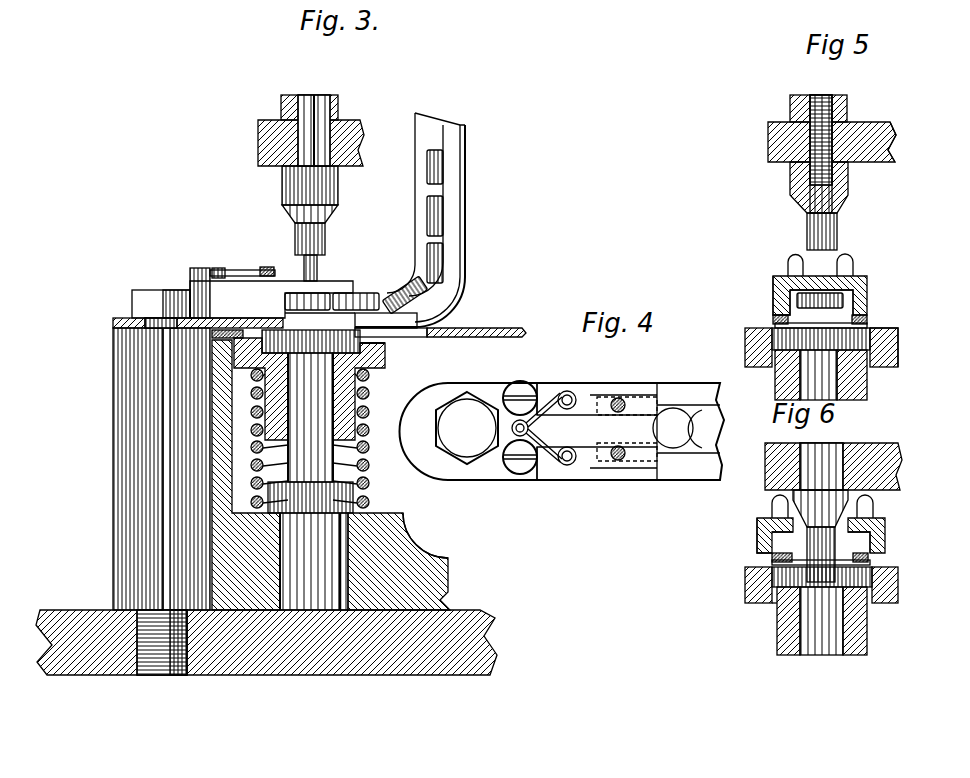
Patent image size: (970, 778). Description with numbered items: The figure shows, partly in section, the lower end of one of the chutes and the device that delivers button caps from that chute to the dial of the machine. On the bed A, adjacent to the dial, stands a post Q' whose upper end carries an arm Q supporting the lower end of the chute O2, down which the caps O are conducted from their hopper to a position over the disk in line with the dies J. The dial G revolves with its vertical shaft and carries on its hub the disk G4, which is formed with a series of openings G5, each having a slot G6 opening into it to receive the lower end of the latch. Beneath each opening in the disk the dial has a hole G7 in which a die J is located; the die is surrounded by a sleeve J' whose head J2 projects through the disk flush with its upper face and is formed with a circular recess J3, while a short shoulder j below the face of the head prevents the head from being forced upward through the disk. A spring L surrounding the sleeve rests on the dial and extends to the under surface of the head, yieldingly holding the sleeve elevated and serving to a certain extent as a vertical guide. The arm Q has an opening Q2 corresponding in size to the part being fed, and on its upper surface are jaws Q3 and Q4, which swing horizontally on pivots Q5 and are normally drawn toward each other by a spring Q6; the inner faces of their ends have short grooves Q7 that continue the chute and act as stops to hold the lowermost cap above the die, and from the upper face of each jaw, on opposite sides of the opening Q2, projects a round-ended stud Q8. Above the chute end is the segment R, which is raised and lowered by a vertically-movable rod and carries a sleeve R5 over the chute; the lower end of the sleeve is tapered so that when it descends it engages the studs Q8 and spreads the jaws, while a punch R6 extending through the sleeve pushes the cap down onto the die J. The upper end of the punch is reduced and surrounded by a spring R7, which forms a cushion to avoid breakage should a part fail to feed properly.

In FIG. 3, the bed A is at (68, 612).
In FIG. 3, the post Q' is at (143, 469).
In FIG. 3, the dial G is at (389, 520).
In FIG. 3, the hole G7 is at (350, 538).
In FIG. 3, the head J2 is at (384, 362).
In FIG. 5, the head J2 is at (899, 358).
In FIG. 6, the head J2 is at (747, 597).
In FIG. 3, the shoulder j is at (384, 343).
In FIG. 5, the shoulder j is at (899, 340).
In FIG. 3, the circular recess J3 is at (311, 341).
In FIG. 5, the circular recess J3 is at (821, 339).
In FIG. 6, the circular recess J3 is at (822, 578).
In FIG. 3, the die J is at (325, 481).
In FIG. 5, the die J is at (818, 375).
In FIG. 6, the die J is at (861, 626).
In FIG. 3, the spring L is at (370, 398).
In FIG. 3, the arm Q is at (178, 331).
In FIG. 4, the arm Q is at (561, 443).
In FIG. 5, the arm Q is at (790, 331).
In FIG. 6, the arm Q is at (859, 570).
In FIG. 3, the opening G5 is at (215, 338).
In FIG. 3, the jaw Q4 is at (274, 304).
In FIG. 4, the jaw Q4 is at (592, 464).
In FIG. 5, the jaw Q4 is at (775, 289).
In FIG. 6, the jaw Q4 is at (772, 529).
In FIG. 3, the pivot Q5 is at (203, 268).
In FIG. 4, the pivot Q5 is at (519, 387).
In FIG. 3, the spring Q6 is at (238, 269).
In FIG. 4, the spring Q6 is at (553, 460).
In FIG. 3, the slot G6 is at (423, 333).
In FIG. 3, the disk G4 is at (489, 333).
In FIG. 3, the segment R is at (352, 122).
In FIG. 5, the segment R is at (864, 124).
In FIG. 6, the segment R is at (833, 457).
In FIG. 3, the sleeve R5 is at (338, 185).
In FIG. 5, the sleeve R5 is at (846, 183).
In FIG. 6, the sleeve R5 is at (820, 512).
In FIG. 5, the punch R6 is at (831, 226).
In FIG. 5, the spring R7 is at (886, 146).
In FIG. 3, the round-ended stud Q8 is at (318, 266).
In FIG. 4, the round-ended stud Q8 is at (620, 400).
In FIG. 5, the round-ended stud Q8 is at (793, 259).
In FIG. 6, the round-ended stud Q8 is at (773, 506).
In FIG. 3, the cap O is at (427, 175).
In FIG. 5, the cap O is at (812, 294).
In FIG. 3, the chute O2 is at (451, 197).
In FIG. 4, the jaw Q3 is at (590, 395).
In FIG. 5, the jaw Q3 is at (872, 278).
In FIG. 6, the jaw Q3 is at (886, 524).
In FIG. 4, the opening Q2 is at (687, 455).
In FIG. 5, the opening Q2 is at (868, 316).
In FIG. 6, the opening Q2 is at (870, 558).
In FIG. 4, the groove Q7 is at (637, 395).
In FIG. 5, the groove Q7 is at (864, 293).
In FIG. 6, the groove Q7 is at (870, 538).
In FIG. 5, the sleeve J' is at (836, 375).
In FIG. 6, the sleeve J' is at (834, 621).
In FIG. 6, the flange underside a is at (778, 612).